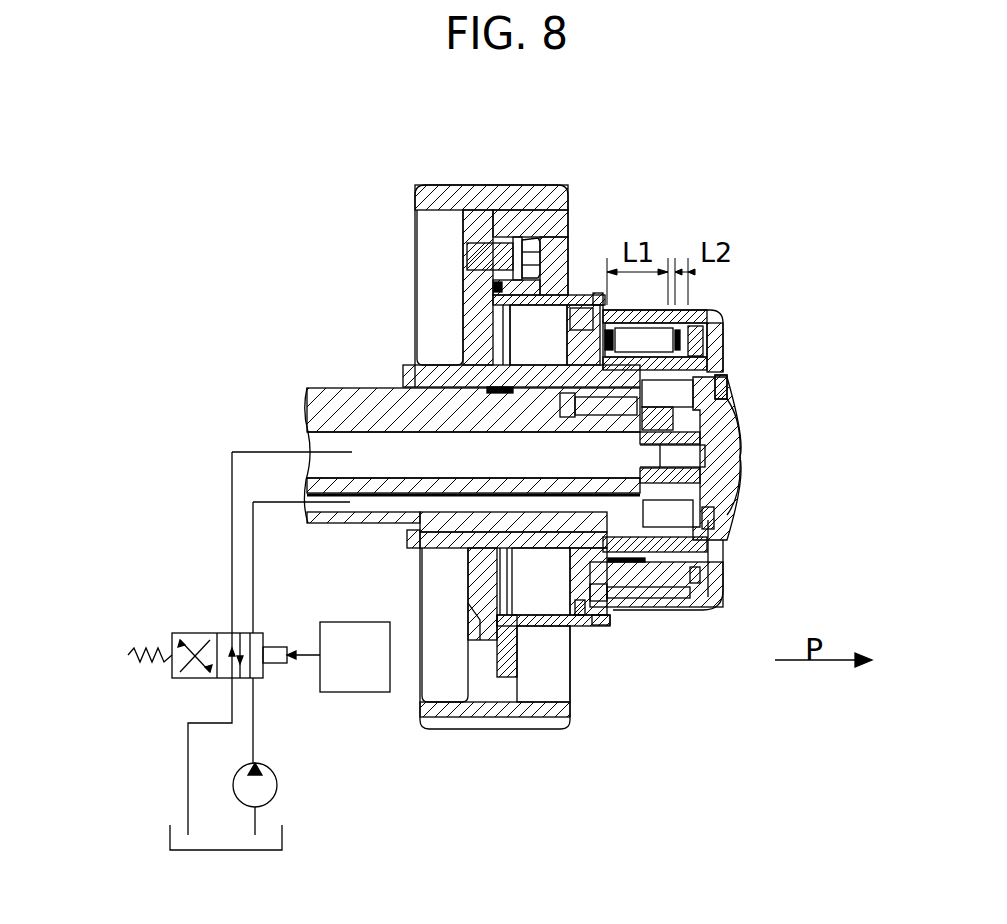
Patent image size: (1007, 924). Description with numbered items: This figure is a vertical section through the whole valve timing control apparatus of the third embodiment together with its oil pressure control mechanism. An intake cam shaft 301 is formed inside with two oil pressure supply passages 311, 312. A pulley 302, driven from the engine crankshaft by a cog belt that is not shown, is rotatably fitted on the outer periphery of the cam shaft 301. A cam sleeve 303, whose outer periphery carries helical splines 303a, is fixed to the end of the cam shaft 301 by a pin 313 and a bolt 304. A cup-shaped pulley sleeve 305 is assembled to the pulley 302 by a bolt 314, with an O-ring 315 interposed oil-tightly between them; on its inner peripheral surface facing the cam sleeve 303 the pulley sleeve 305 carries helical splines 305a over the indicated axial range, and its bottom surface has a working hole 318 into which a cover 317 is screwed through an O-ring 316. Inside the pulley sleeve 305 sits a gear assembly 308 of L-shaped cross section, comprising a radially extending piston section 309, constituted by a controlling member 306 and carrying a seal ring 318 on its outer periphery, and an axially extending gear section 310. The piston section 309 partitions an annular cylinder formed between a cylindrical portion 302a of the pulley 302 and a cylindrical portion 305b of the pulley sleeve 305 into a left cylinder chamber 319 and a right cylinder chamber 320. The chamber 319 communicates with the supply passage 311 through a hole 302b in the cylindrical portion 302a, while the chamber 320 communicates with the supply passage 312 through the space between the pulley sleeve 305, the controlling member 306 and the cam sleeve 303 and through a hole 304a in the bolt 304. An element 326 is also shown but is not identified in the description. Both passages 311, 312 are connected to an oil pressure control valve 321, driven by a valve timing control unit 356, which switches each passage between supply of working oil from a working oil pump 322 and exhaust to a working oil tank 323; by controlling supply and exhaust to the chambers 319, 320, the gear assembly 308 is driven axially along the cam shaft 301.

The intake cam shaft 301 is at (313, 413).
The pulley 302 is at (425, 200).
The cylindrical portion of the pulley 302a is at (540, 357).
The hole 302b is at (500, 538).
The cam sleeve 303 is at (714, 340).
The helical splines 303a is at (700, 318).
The bolt 304 is at (710, 412).
The hole 304a is at (650, 455).
The pulley sleeve 305 is at (545, 290).
The helical splines 305a is at (592, 320).
The cylindrical portion of the pulley sleeve 305b is at (508, 312).
The controlling member 306 is at (642, 568).
The gear assembly 308 is at (658, 575).
The piston section 309 is at (638, 583).
The gear section 310 is at (690, 580).
The oil pressure supply passage 311 is at (364, 505).
The oil pressure supply passage 312 is at (372, 442).
The pin 313 is at (567, 407).
The bolt 314 is at (483, 258).
The O-ring 315 is at (495, 292).
The O-ring 316 is at (722, 378).
The cover 317 is at (728, 428).
The working hole 318 is at (581, 615).
The cylinder chamber 319 is at (540, 603).
The cylinder chamber 320 is at (598, 626).
The oil pressure control valve 321 is at (198, 630).
The working oil pump 322 is at (280, 792).
The working oil tank 323 is at (286, 843).
The seal 326 is at (702, 582).
The valve timing control unit 356 is at (348, 682).